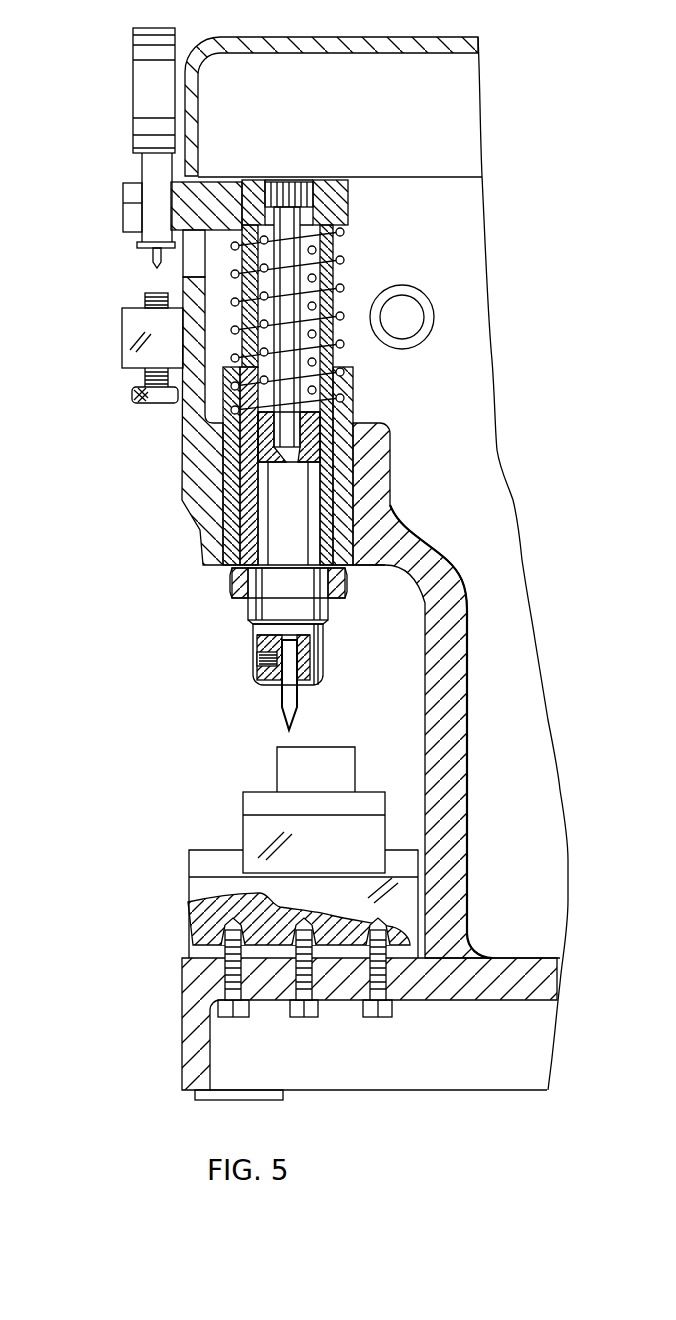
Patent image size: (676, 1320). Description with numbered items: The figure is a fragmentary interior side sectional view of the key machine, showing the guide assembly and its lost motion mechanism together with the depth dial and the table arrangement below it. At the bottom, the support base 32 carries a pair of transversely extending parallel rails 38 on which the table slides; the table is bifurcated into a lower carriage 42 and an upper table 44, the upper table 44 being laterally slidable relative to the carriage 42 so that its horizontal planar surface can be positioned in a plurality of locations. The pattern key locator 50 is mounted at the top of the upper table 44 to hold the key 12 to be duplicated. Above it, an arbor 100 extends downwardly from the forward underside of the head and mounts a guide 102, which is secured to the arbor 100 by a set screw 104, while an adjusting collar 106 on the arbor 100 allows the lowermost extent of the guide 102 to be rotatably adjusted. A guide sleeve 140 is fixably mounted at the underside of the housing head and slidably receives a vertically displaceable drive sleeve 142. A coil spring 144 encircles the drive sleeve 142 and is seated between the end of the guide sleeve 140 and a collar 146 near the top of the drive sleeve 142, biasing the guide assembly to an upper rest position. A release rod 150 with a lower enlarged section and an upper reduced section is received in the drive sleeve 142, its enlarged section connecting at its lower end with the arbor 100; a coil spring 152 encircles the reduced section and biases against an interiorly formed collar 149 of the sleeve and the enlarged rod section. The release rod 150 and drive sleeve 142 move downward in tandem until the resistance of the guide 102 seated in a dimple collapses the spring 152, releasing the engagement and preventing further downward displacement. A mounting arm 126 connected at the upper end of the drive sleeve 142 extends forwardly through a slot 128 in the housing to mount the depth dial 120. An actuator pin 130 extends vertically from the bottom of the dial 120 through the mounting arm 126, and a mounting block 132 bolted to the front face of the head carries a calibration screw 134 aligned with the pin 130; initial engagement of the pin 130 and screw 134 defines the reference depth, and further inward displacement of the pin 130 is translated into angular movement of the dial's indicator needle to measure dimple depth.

The key 12 is at (310, 45).
The support base 32 is at (260, 988).
The rails 38 is at (262, 905).
The lower carriage 42 is at (195, 908).
The upper table 44 is at (252, 830).
The pattern key locator 50 is at (285, 775).
The arbor 100 is at (278, 603).
The guide 102 is at (287, 722).
The set screw 104 is at (258, 658).
The adjusting collar 106 is at (230, 582).
The depth dial 120 is at (133, 105).
The mounting arm 126 is at (123, 205).
The slot 128 is at (193, 263).
The actuator pin 130 is at (152, 262).
The mounting block 132 is at (130, 322).
The calibration screw 134 is at (131, 395).
The guide sleeve 140 is at (238, 492).
The drive sleeve 142 is at (250, 455).
The coil spring 144 is at (332, 248).
The collar 146 is at (340, 212).
The interiorly formed collar 149 is at (292, 181).
The release rod 150 is at (352, 356).
The coil spring 152 is at (313, 270).